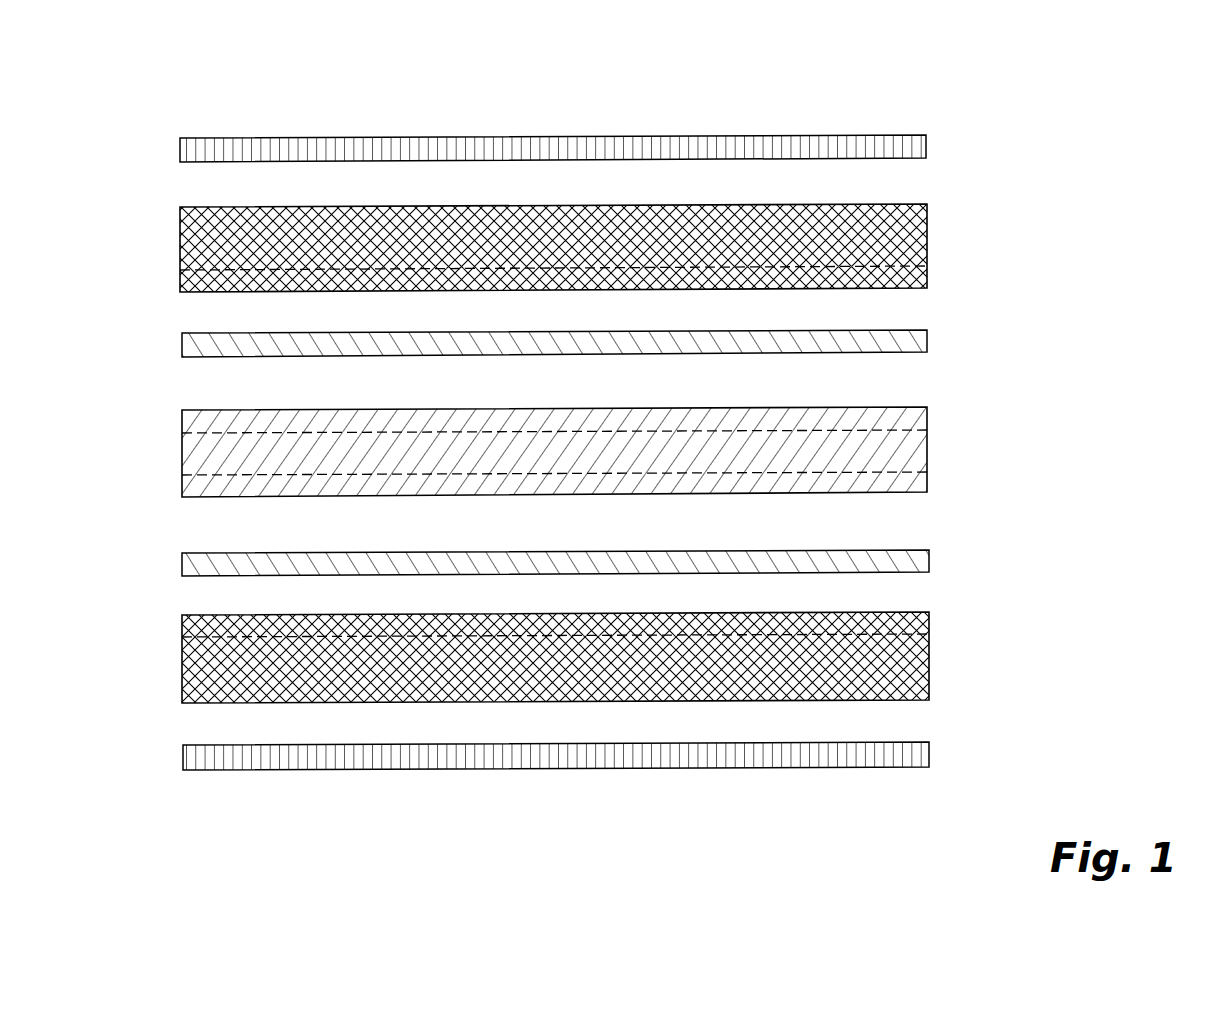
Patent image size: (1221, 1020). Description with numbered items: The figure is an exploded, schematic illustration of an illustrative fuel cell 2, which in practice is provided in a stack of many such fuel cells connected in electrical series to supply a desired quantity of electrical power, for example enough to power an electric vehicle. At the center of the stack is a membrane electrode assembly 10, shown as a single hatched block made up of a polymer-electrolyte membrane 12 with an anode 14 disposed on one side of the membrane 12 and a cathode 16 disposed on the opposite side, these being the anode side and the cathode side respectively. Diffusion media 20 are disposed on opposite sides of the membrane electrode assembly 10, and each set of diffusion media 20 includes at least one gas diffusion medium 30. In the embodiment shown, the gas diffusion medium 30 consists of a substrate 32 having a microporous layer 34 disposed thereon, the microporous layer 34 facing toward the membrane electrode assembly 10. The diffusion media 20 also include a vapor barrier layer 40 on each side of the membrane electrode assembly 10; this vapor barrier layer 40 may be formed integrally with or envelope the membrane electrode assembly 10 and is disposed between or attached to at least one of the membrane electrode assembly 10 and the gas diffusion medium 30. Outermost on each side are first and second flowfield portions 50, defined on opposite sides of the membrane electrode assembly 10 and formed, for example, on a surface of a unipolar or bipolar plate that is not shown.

The fuel cell 2 is at (774, 80).
The membrane electrode assembly 10 is at (548, 450).
The polymer-electrolyte membrane 12 is at (927, 450).
The anode 14 is at (927, 418).
The cathode 16 is at (927, 481).
The diffusion media 20 is at (142, 208).
The gas diffusion medium 30 is at (636, 453).
The substrate 32 is at (927, 237).
The microporous layer 34 is at (927, 272).
The vapor barrier layer 40 is at (927, 341).
The flowfield portions 50 is at (622, 137).